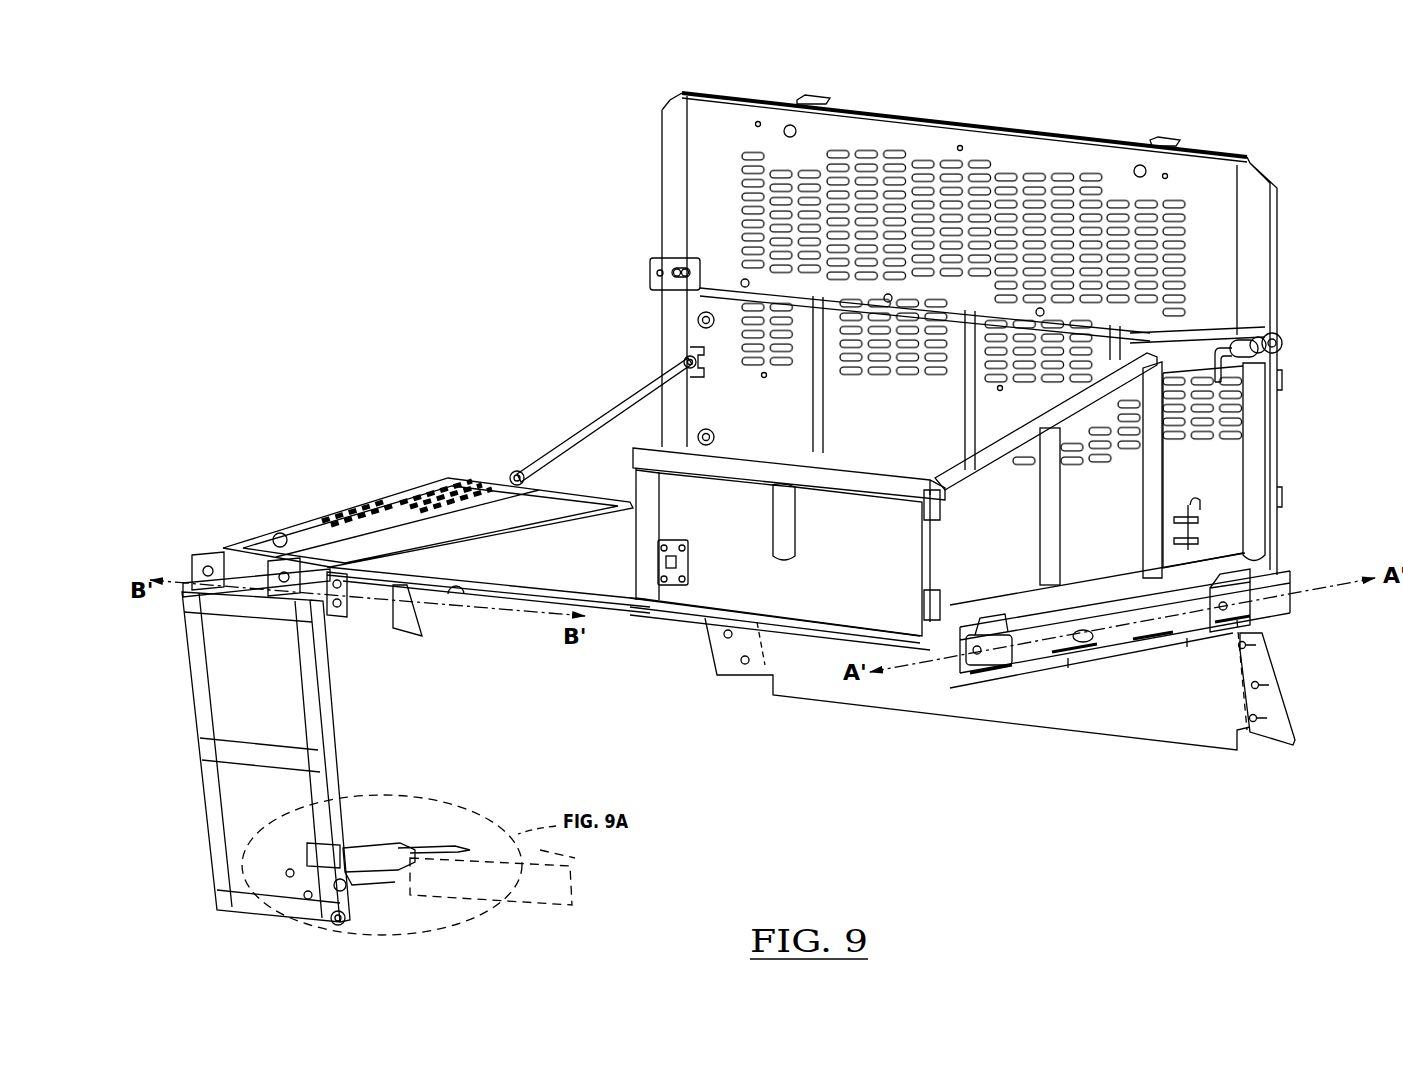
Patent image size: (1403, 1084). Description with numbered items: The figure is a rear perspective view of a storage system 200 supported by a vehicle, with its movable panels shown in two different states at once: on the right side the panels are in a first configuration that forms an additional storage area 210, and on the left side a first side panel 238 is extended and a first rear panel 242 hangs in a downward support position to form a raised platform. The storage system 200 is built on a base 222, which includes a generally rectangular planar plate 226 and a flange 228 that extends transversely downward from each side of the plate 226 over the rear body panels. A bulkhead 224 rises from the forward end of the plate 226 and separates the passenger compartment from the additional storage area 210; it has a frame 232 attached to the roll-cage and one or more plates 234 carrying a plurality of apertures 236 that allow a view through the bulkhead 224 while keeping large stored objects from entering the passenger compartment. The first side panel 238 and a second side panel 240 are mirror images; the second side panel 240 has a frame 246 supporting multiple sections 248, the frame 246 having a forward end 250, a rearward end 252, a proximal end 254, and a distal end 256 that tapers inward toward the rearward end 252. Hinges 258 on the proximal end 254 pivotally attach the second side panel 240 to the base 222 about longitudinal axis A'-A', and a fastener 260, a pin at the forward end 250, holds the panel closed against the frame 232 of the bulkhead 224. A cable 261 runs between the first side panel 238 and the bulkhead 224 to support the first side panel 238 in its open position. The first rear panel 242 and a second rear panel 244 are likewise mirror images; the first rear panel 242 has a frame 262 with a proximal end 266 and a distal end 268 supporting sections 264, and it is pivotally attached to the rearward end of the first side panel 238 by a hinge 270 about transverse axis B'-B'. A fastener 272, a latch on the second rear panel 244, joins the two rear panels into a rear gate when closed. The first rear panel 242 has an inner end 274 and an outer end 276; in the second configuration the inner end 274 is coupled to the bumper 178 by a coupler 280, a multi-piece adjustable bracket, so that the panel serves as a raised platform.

The storage system 200 is at (1262, 93).
The additional storage area 210 is at (958, 307).
The base 222 is at (395, 548).
The bulkhead 224 is at (946, 152).
The plate 226 is at (568, 590).
The flange 228 is at (1275, 585).
The frame 232 is at (805, 96).
The plates 234 is at (703, 163).
The apertures 236 is at (1011, 318).
The first side panel 238 is at (408, 527).
The second side panel 240 is at (1230, 475).
The first rear panel 242 is at (249, 776).
The second rear panel 244 is at (858, 582).
The frame 246 is at (1255, 410).
The sections 248 is at (1020, 546).
The forward end 250 is at (1252, 546).
The rearward end 252 is at (930, 575).
The proximal end 254 is at (1130, 585).
The distal end 256 is at (1157, 362).
The hinges 258 is at (1240, 650).
The fastener 260 is at (1262, 340).
The cable 261 is at (574, 426).
The frame 262 is at (183, 660).
The sections 264 is at (222, 673).
The proximal end 266 is at (248, 585).
The distal end 268 is at (263, 925).
The hinge 270 is at (290, 602).
The fastener 272 is at (668, 592).
The inner end 274 is at (305, 705).
The outer end 276 is at (212, 805).
The coupler 280 is at (393, 848).
The bumper 178 is at (487, 893).